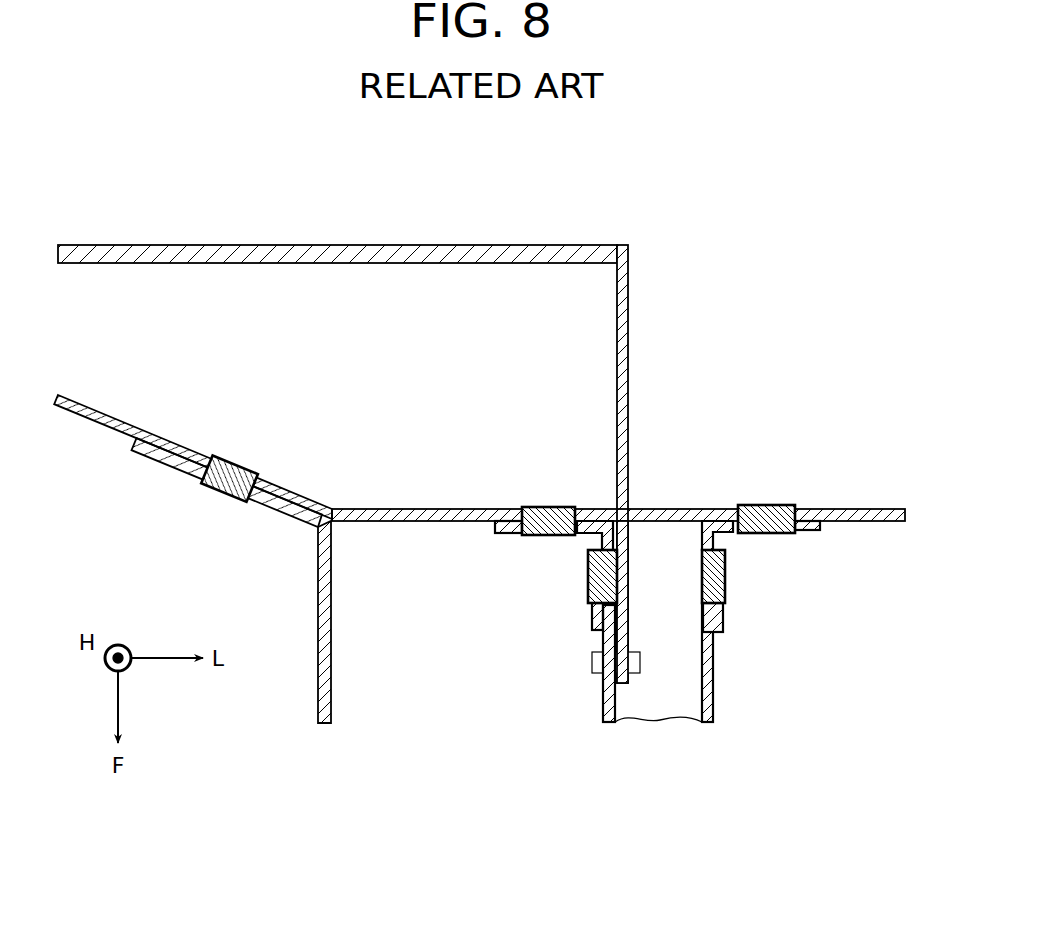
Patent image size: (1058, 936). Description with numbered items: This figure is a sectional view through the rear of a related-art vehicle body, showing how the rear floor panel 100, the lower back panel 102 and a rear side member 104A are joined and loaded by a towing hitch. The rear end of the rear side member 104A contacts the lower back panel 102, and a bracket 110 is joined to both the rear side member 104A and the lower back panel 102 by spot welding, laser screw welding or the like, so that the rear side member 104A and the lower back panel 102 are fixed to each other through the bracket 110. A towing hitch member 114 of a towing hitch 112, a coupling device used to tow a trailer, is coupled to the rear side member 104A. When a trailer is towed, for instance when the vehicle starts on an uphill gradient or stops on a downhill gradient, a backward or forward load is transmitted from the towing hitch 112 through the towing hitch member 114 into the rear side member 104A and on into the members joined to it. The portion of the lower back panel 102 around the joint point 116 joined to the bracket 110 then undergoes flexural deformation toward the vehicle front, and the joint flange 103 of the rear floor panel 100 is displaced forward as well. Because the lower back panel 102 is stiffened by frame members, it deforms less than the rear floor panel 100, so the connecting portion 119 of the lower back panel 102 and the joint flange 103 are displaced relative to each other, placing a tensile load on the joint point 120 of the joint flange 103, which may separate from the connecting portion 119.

The rear floor panel 100 is at (336, 624).
The lower back panel 102 is at (860, 521).
The joint flange 103 is at (268, 505).
The rear side member 104A is at (658, 693).
The bracket 110 is at (586, 617).
The towing hitch 112 is at (308, 245).
The towing hitch member 114 is at (615, 402).
The joint point 116 is at (550, 535).
The connecting portion 119 is at (93, 408).
The joint point 120 is at (237, 465).